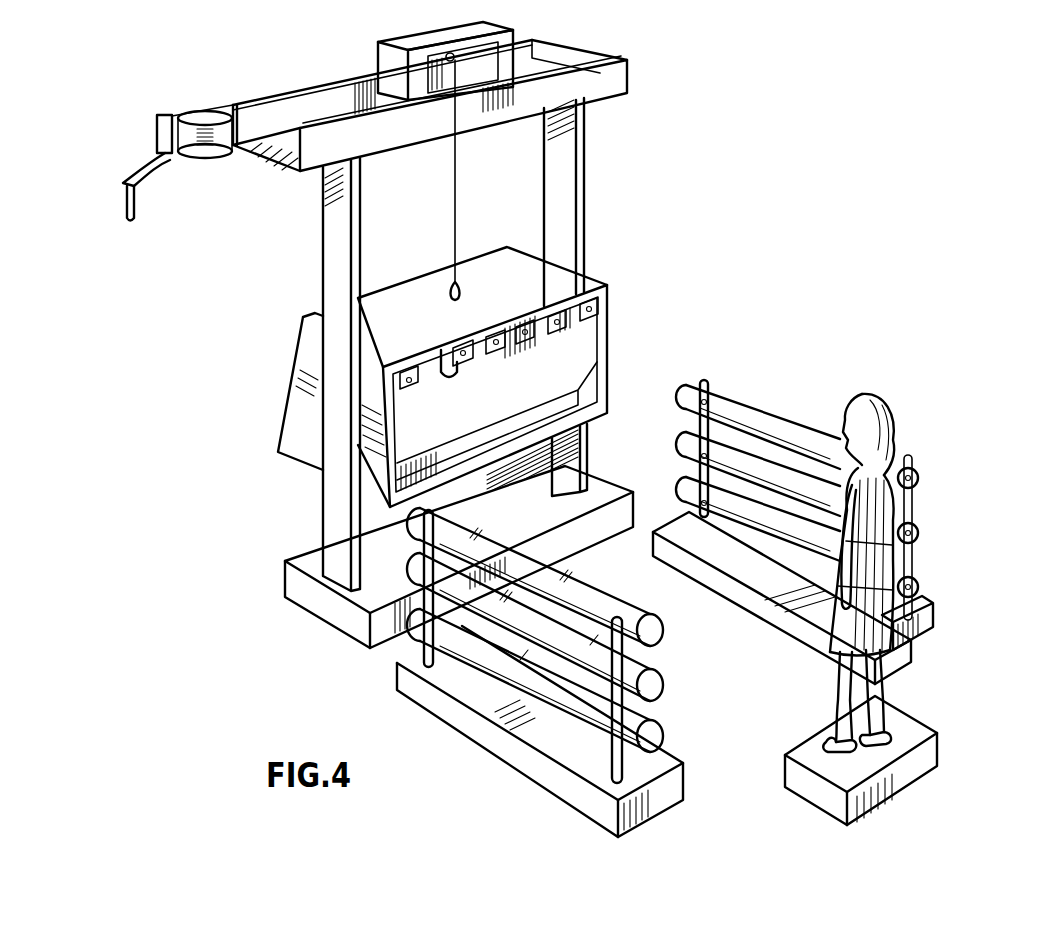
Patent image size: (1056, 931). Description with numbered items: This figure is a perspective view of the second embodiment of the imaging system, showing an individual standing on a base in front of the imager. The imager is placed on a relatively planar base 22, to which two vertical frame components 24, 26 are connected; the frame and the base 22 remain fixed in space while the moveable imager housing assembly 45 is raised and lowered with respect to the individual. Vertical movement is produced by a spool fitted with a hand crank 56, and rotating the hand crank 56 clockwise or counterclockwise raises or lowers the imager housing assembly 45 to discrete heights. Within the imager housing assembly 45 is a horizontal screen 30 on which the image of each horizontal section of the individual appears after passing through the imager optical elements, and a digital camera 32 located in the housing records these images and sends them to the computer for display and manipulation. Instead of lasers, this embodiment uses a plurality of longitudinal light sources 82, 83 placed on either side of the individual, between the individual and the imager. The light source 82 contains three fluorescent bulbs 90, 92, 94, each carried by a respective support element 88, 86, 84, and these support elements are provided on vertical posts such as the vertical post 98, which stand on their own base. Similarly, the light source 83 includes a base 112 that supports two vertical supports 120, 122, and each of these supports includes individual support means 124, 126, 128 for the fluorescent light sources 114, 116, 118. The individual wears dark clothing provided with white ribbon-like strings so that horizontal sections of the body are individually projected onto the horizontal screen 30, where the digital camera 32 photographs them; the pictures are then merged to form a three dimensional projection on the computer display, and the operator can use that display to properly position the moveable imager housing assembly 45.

The base 22 is at (357, 615).
The vertical frame component 24 is at (588, 212).
The vertical frame component 26 is at (332, 500).
The horizontal screen 30 is at (455, 421).
The digital camera 32 is at (449, 353).
The moveable imager housing assembly 45 is at (607, 318).
The hand crank 56 is at (137, 212).
The longitudinal light source 82 is at (552, 667).
The longitudinal light source 83 is at (823, 576).
The support element 84 is at (663, 720).
The support element 86 is at (657, 684).
The support element 88 is at (655, 642).
The fluorescent bulb 90 is at (504, 547).
The fluorescent bulb 92 is at (418, 566).
The fluorescent bulb 94 is at (400, 650).
The vertical post 98 is at (417, 601).
The base 112 is at (737, 588).
The fluorescent light source 114 is at (797, 427).
The fluorescent light source 116 is at (680, 433).
The fluorescent light source 118 is at (698, 535).
The vertical support 120 is at (701, 383).
The vertical support 122 is at (940, 504).
The support means 124 is at (709, 396).
The support means 126 is at (673, 447).
The support means 128 is at (686, 500).